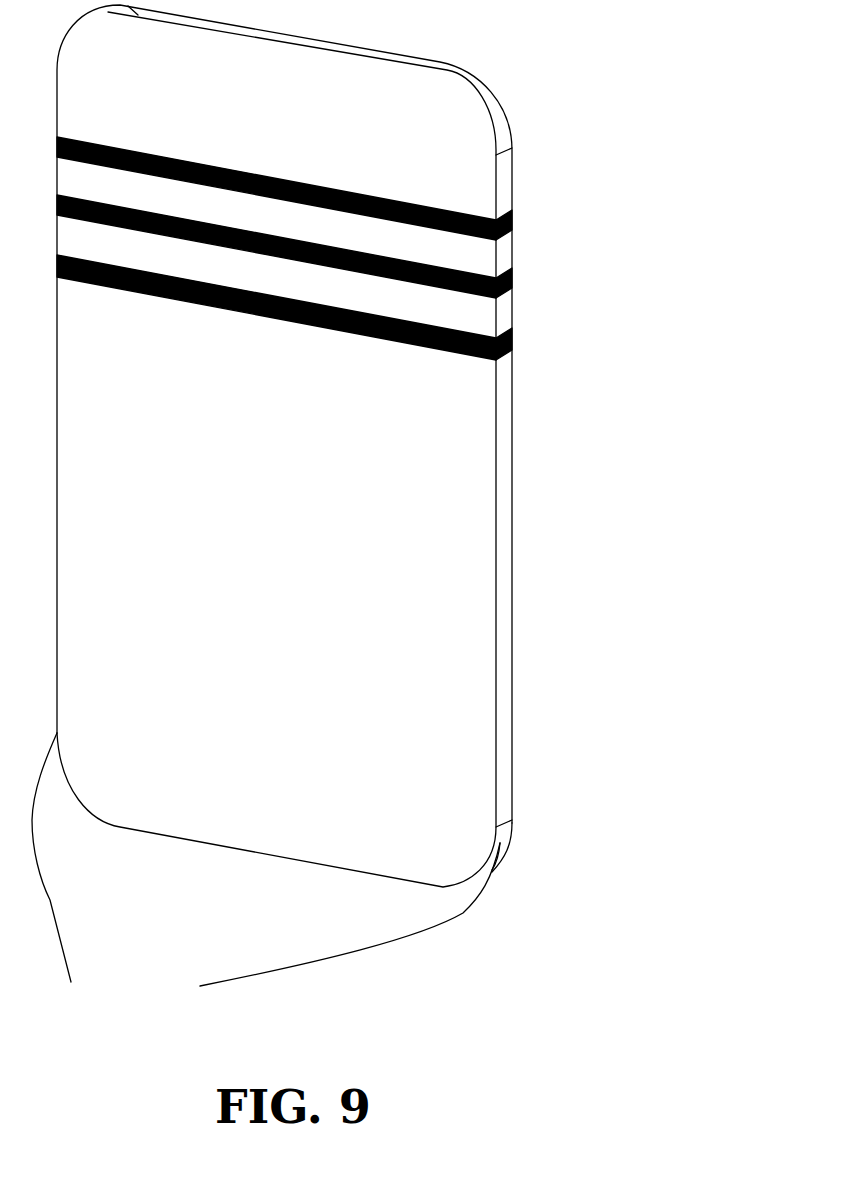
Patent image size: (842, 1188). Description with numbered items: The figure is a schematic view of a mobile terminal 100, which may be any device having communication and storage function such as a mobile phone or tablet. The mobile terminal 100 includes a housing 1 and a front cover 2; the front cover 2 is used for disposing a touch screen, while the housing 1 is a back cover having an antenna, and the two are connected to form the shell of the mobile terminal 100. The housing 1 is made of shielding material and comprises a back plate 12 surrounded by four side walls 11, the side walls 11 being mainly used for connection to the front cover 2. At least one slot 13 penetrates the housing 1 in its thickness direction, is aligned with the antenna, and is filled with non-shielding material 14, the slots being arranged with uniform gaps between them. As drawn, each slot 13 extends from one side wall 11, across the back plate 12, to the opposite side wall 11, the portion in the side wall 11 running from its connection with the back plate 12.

The mobile terminal 100 is at (377, 446).
The front cover 2 is at (513, 395).
The slot 13 is at (503, 222).
The non-shielding material 14 is at (510, 232).
The housing 1 is at (266, 894).
The side walls 11 is at (266, 868).
The back plate 12 is at (190, 792).